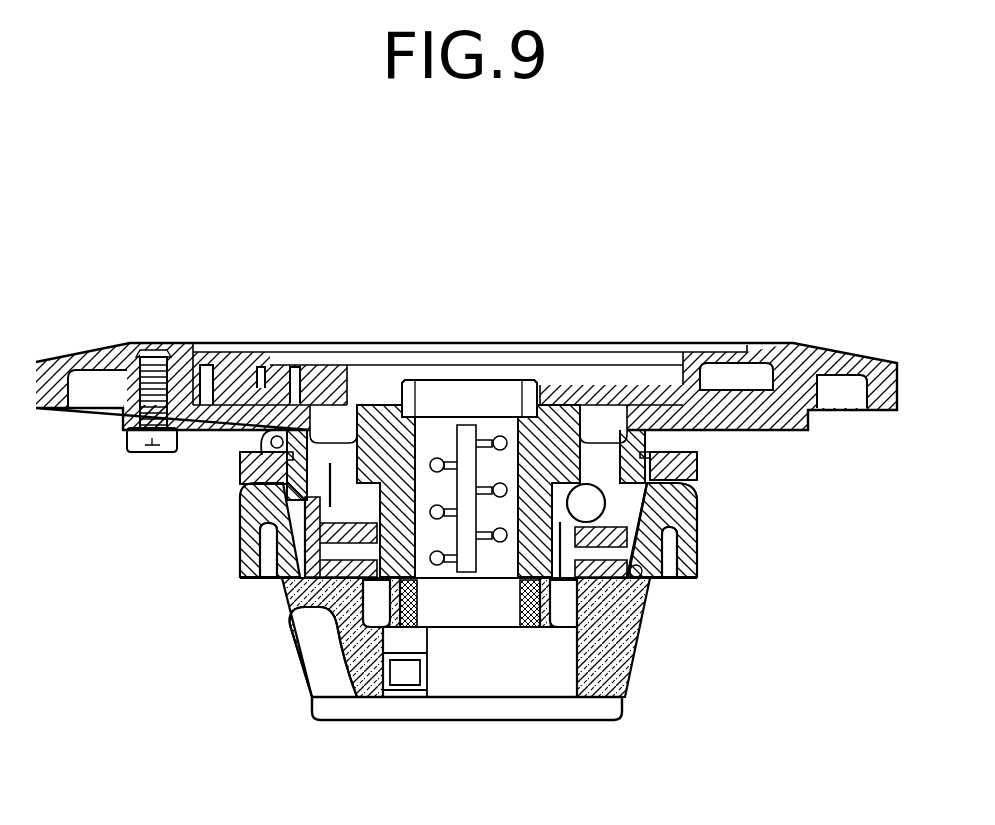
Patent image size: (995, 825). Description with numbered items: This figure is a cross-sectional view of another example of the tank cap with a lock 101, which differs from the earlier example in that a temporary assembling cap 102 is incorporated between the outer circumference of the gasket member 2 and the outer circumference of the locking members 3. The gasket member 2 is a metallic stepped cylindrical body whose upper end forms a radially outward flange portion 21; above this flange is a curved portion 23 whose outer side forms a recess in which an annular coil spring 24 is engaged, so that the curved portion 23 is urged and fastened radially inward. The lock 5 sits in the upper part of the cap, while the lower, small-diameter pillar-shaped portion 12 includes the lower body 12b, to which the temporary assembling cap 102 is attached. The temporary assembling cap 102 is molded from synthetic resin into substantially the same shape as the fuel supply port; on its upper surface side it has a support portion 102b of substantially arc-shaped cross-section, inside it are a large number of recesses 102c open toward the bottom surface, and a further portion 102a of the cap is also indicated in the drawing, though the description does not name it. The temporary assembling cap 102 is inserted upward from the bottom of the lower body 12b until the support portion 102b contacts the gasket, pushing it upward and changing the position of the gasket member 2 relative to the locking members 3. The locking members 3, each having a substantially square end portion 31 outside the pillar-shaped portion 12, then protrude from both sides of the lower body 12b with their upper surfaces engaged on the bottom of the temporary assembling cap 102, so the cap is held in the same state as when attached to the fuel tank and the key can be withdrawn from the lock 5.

The tank cap with a lock 101 is at (695, 332).
The pillar-shaped portion 12 is at (470, 544).
The lower body 12b is at (293, 660).
The gasket member 2 is at (240, 473).
The flange portion 21 is at (214, 372).
The curved portion 23 is at (298, 425).
The annular coil spring 24 is at (255, 455).
The lock 5 is at (481, 390).
The temporary assembling cap 102 is at (462, 521).
The bearing retainer portion 102a is at (634, 578).
The support portion 102b is at (247, 518).
The recesses 102c is at (273, 580).
The locking members 3 is at (473, 696).
The end portion 31 is at (593, 688).